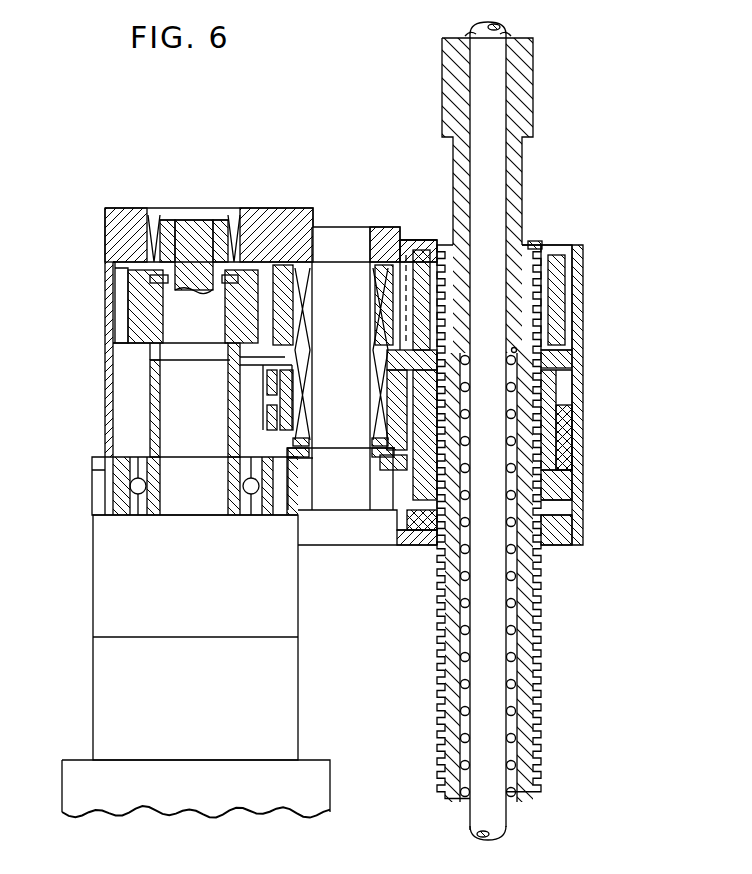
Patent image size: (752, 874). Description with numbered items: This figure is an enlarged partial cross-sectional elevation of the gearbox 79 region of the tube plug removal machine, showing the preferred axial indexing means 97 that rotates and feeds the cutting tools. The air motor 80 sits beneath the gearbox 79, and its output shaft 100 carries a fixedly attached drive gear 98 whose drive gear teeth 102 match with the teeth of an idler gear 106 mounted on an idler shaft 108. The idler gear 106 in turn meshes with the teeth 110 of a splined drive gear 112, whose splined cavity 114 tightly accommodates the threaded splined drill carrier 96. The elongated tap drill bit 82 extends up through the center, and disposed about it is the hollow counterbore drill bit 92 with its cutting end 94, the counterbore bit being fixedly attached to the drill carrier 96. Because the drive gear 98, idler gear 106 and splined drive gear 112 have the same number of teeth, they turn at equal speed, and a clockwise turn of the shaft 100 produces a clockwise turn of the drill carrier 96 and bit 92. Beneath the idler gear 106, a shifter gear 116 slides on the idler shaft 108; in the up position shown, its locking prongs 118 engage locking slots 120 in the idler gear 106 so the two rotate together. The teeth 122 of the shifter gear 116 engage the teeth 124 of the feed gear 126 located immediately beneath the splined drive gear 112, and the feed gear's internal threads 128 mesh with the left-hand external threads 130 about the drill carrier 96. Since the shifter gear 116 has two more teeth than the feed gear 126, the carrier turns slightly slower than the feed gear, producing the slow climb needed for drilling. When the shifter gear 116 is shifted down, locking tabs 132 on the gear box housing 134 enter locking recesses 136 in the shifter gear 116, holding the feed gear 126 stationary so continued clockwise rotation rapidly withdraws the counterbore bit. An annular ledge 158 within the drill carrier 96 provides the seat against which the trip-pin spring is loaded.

The gearbox 79 is at (105, 226).
The air motor 80 is at (204, 606).
The tap drill bit 82 is at (486, 168).
The counterbore drill bit 92 is at (522, 102).
The cutting end 94 is at (506, 37).
The splined drill carrier 96 is at (522, 636).
The axial indexing means 97 is at (580, 396).
The drive gear 98 is at (140, 313).
The output shaft 100 is at (172, 372).
The drive gear teeth 102 is at (124, 296).
The idler gear 106 is at (279, 263).
The idler shaft 108 is at (337, 283).
The teeth of splined drive gear 110 is at (418, 276).
The splined drive gear 112 is at (550, 298).
The splined cavity 114 is at (538, 246).
The shifter gear 116 is at (278, 428).
The locking prongs 118 is at (278, 380).
The locking slots 120 is at (280, 402).
The teeth of shifter gear 122 is at (238, 466).
The teeth of feed gear 124 is at (566, 458).
The feed gear 126 is at (553, 420).
The internal threads 128 is at (558, 481).
The external threads 130 is at (542, 576).
The locking tabs 132 is at (390, 458).
The gear box housing 134 is at (432, 548).
The locking recesses 136 is at (284, 468).
The annular ledge 158 is at (516, 349).